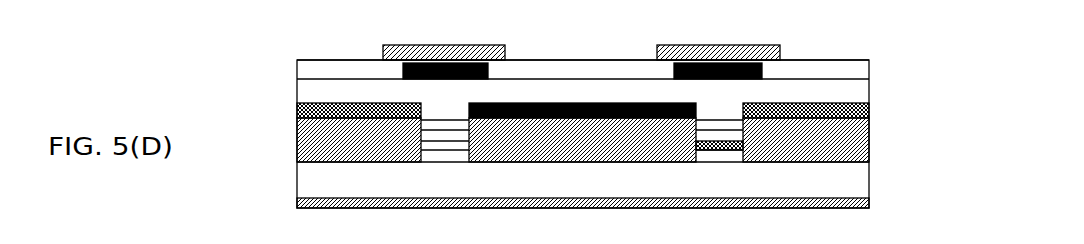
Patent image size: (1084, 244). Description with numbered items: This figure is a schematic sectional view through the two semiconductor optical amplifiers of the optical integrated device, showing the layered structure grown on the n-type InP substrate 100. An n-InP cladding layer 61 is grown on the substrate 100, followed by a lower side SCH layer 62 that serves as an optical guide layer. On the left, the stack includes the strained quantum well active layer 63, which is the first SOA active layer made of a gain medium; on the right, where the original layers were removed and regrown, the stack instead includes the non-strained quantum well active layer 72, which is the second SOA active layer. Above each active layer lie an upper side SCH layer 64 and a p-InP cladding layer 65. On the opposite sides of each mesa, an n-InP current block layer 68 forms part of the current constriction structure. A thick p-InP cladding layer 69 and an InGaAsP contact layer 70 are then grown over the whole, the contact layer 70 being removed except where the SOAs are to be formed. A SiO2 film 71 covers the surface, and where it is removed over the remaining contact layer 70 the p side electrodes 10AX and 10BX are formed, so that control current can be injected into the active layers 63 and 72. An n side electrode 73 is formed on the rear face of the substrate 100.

The p side electrode 10AX is at (443, 53).
The p side electrode 10BX is at (667, 53).
The n-InP cladding layer 61 is at (437, 163).
The lower side SCH layer 62 is at (421, 152).
The strained quantum well active layer 63 is at (432, 143).
The upper side SCH layer 64 is at (428, 131).
The p-InP cladding layer 65 is at (442, 122).
The n-InP current block layer 68 is at (871, 112).
The p-InP cladding layer 69 is at (849, 86).
The InGaAsP contact layer 70 is at (678, 80).
The SiO2 film 71 is at (812, 70).
The non-strained quantum well active layer 72 is at (743, 215).
The n side electrode 73 is at (303, 200).
The n-type InP substrate 100 is at (847, 183).